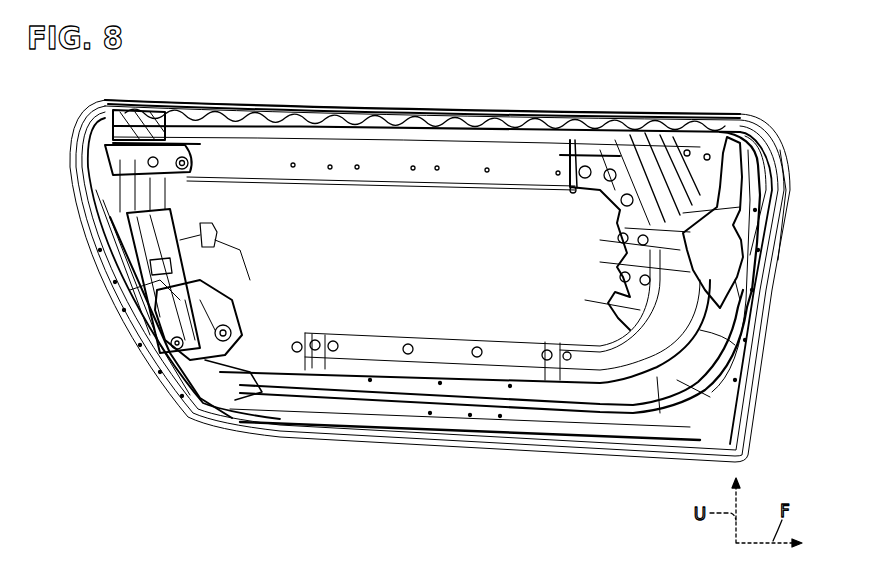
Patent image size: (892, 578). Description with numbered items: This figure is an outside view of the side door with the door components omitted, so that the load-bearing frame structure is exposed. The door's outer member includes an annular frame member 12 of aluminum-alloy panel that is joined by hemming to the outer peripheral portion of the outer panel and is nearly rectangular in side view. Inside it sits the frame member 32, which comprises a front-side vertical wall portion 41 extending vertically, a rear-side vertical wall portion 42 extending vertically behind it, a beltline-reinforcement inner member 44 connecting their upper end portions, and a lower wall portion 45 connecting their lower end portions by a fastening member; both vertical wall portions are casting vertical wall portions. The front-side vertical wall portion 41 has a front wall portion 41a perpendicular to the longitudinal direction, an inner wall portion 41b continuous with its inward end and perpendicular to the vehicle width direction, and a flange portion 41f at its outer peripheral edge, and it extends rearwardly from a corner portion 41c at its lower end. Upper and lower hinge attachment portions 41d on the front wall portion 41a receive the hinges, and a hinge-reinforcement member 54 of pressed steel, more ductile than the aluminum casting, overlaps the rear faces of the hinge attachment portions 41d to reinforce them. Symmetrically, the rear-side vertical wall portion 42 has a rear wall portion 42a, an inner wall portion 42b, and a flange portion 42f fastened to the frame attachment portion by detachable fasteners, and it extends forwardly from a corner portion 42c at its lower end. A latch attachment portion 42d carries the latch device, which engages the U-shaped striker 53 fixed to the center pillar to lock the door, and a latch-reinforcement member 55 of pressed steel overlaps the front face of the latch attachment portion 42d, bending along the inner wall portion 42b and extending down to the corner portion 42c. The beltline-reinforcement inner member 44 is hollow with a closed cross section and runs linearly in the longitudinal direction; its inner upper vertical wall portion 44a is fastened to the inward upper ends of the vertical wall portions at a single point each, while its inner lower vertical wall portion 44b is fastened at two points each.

The frame member 12 is at (422, 441).
The frame member 32 is at (586, 88).
The front-side vertical wall portion 41 is at (744, 320).
The front wall portion 41a is at (714, 324).
The inner wall portion 41b is at (632, 297).
The corner portion 41c is at (670, 374).
The hinge attachment portion 41d is at (758, 194).
The flange portion 41f is at (747, 293).
The rear-side vertical wall portion 42 is at (132, 257).
The rear wall portion 42a is at (140, 188).
The inner wall portion 42b is at (173, 193).
The corner portion 42c is at (215, 365).
The latch attachment portion 42d is at (128, 238).
The flange portion 42f is at (128, 290).
The beltline-reinforcement inner member 44 is at (396, 183).
The inner upper vertical wall portion 44a is at (378, 116).
The inner lower vertical wall portion 44b is at (312, 169).
The lower wall portion 45 is at (447, 356).
The striker 53 is at (100, 277).
The hinge-reinforcement member 54 is at (683, 233).
The latch-reinforcement member 55 is at (232, 297).